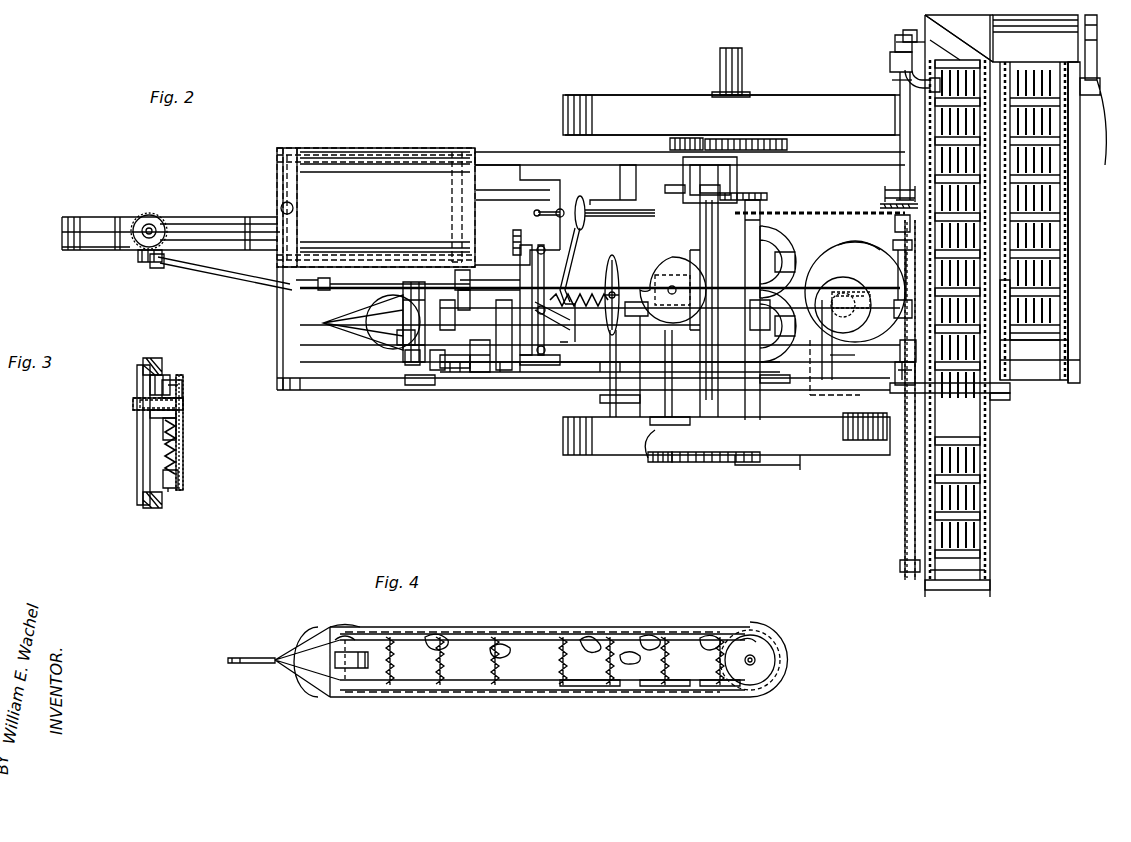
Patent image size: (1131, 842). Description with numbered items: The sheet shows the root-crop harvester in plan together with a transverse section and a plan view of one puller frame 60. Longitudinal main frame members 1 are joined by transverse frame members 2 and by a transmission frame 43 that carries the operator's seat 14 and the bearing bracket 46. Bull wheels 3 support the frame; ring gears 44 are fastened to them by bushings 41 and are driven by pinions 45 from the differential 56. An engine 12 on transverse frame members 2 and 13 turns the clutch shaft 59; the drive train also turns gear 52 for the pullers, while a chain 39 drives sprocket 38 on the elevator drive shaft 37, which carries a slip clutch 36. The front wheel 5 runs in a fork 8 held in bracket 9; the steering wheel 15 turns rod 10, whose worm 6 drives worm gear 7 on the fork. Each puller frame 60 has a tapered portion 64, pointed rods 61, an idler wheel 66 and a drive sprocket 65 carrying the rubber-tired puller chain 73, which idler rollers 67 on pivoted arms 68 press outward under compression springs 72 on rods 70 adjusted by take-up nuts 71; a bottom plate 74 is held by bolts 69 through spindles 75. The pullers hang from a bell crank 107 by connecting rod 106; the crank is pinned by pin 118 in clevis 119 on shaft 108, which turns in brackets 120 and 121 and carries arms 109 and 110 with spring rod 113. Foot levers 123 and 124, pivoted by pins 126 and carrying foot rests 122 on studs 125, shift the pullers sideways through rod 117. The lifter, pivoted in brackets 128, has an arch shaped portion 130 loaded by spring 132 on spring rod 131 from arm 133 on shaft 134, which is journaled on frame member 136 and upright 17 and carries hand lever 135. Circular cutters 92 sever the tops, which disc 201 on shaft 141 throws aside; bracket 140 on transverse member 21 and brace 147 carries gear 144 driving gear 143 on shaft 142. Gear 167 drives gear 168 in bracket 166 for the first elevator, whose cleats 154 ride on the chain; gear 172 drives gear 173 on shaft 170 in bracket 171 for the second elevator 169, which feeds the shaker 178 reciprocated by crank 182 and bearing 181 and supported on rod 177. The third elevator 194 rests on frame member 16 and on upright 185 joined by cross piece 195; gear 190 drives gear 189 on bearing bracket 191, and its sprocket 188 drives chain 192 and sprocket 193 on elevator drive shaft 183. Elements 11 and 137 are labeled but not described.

In FIG. 2, the main frame members 1 is at (315, 420).
In FIG. 2, the transverse frame members 2 is at (278, 302).
In FIG. 2, the bull wheels 3 is at (728, 470).
In FIG. 2, the guiding or front wheel 5 is at (105, 245).
In FIG. 2, the worm 6 is at (150, 262).
In FIG. 2, the worm gear 7 is at (139, 216).
In FIG. 2, the guide wheel fork 8 is at (151, 228).
In FIG. 2, the supporting bracket 9 is at (258, 226).
In FIG. 2, the rod 10 is at (198, 272).
In FIG. 2, the housing 11 is at (348, 248).
In FIG. 2, the internal combustion engine 12 is at (517, 215).
In FIG. 2, the transverse frame member 13 is at (456, 192).
In FIG. 2, the operator's seat 14 is at (673, 290).
In FIG. 2, the steering wheel 15 is at (680, 265).
In FIG. 2, the longitudinal frame member 16 is at (786, 455).
In FIG. 2, the upright member 17 is at (768, 383).
In FIG. 2, the transverse frame member 21 is at (900, 148).
In FIG. 2, the slip clutch 36 is at (880, 192).
In FIG. 2, the elevator drive shaft 37 is at (890, 100).
In FIG. 2, the sprocket 38 is at (895, 204).
In FIG. 2, the chain 39 is at (845, 212).
In FIG. 2, the bushings 41 is at (731, 48).
In FIG. 2, the transmission frame 43 is at (668, 425).
In FIG. 2, the ring gears 44 is at (722, 462).
In FIG. 2, the pinions 45 is at (675, 462).
In FIG. 2, the bearing bracket 46 is at (755, 205).
In FIG. 2, the gear 52 is at (762, 183).
In FIG. 2, the differential 56 is at (690, 160).
In FIG. 2, the clutch shaft 59 is at (598, 213).
In FIG. 2, the puller frames 60 is at (590, 372).
In FIG. 3, the puller frames 60 is at (182, 423).
In FIG. 4, the puller frames 60 is at (520, 680).
In FIG. 4, the pointed rods 61 is at (258, 666).
In FIG. 4, the tapered portion 64 is at (305, 672).
In FIG. 4, the drive sprockets 65 is at (760, 678).
In FIG. 4, the idler wheels 66 is at (350, 670).
In FIG. 3, the spring pressed idler rollers 67 is at (148, 382).
In FIG. 4, the spring pressed idler rollers 67 is at (520, 630).
In FIG. 3, the pivoted arms 68 is at (165, 392).
In FIG. 4, the pivoted arms 68 is at (650, 640).
In FIG. 3, the bolts 69 is at (135, 406).
In FIG. 4, the bolts 69 is at (590, 638).
In FIG. 3, the rods 70 is at (178, 438).
In FIG. 4, the rods 70 is at (585, 686).
In FIG. 3, the take-up nuts 71 is at (178, 478).
In FIG. 4, the take-up nuts 71 is at (710, 686).
In FIG. 3, the compression springs 72 is at (176, 456).
In FIG. 4, the compression springs 72 is at (655, 686).
In FIG. 3, the puller chain 73 is at (160, 508).
In FIG. 4, the puller chain 73 is at (345, 630).
In FIG. 3, the bottom plate 74 is at (138, 465).
In FIG. 3, the spindles 75 is at (148, 414).
In FIG. 2, the circular cutters 92 is at (795, 238).
In FIG. 2, the connecting rod 106 is at (372, 335).
In FIG. 2, the bell crank 107 is at (398, 348).
In FIG. 2, the shaft 108 is at (440, 370).
In FIG. 2, the arm 109 is at (414, 365).
In FIG. 2, the arm 110 is at (420, 385).
In FIG. 2, the spring rod 113 is at (398, 348).
In FIG. 2, the rod 117 is at (462, 270).
In FIG. 2, the pin 118 is at (460, 295).
In FIG. 2, the clevis 119 is at (442, 300).
In FIG. 2, the bracket 120 is at (452, 368).
In FIG. 2, the bracket 121 is at (478, 372).
In FIG. 2, the foot rests 122 is at (560, 350).
In FIG. 2, the foot lever 123 is at (491, 317).
In FIG. 2, the foot lever 124 is at (505, 370).
In FIG. 2, the studs 125 is at (532, 252).
In FIG. 2, the pins 126 is at (570, 330).
In FIG. 2, the brackets 128 is at (628, 165).
In FIG. 2, the arch shaped portion 130 is at (545, 365).
In FIG. 2, the spring rod 131 is at (586, 292).
In FIG. 2, the spring 132 is at (616, 262).
In FIG. 2, the arm 133 is at (625, 316).
In FIG. 2, the shaft 134 is at (618, 340).
In FIG. 2, the hand lever 135 is at (638, 403).
In FIG. 2, the frame member 136 is at (718, 345).
In FIG. 2, the bracket 137 is at (680, 330).
In FIG. 2, the bracket 140 is at (843, 305).
In FIG. 2, the shaft 141 is at (800, 372).
In FIG. 2, the shaft 142 is at (845, 380).
In FIG. 2, the gear 143 is at (900, 360).
In FIG. 2, the gear 144 is at (851, 319).
In FIG. 2, the brace 147 is at (835, 360).
In FIG. 2, the cleats 154 is at (948, 582).
In FIG. 2, the bracket 166 is at (874, 402).
In FIG. 2, the gear 167 is at (906, 362).
In FIG. 2, the gear 168 is at (902, 385).
In FIG. 2, the second elevator 169 is at (1058, 322).
In FIG. 2, the elevator drive shaft 170 is at (930, 40).
In FIG. 2, the bracket 171 is at (895, 48).
In FIG. 2, the gear 172 is at (895, 70).
In FIG. 2, the gear 173 is at (892, 80).
In FIG. 2, the rod 177 is at (1100, 95).
In FIG. 2, the shaker 178 is at (1035, 197).
In FIG. 2, the bearing 181 is at (903, 35).
In FIG. 2, the crank 182 is at (896, 44).
In FIG. 2, the elevator drive shaft 183 is at (960, 572).
In FIG. 2, the second upright 185 is at (1020, 392).
In FIG. 2, the sprocket 188 is at (896, 228).
In FIG. 2, the gear 189 is at (896, 246).
In FIG. 2, the gear 190 is at (898, 262).
In FIG. 2, the bearing bracket 191 is at (851, 241).
In FIG. 2, the chain 192 is at (903, 538).
In FIG. 2, the sprocket 193 is at (905, 568).
In FIG. 2, the third elevator 194 is at (990, 485).
In FIG. 2, the cross piece 195 is at (1002, 398).
In FIG. 2, the rotating disc 201 is at (855, 292).